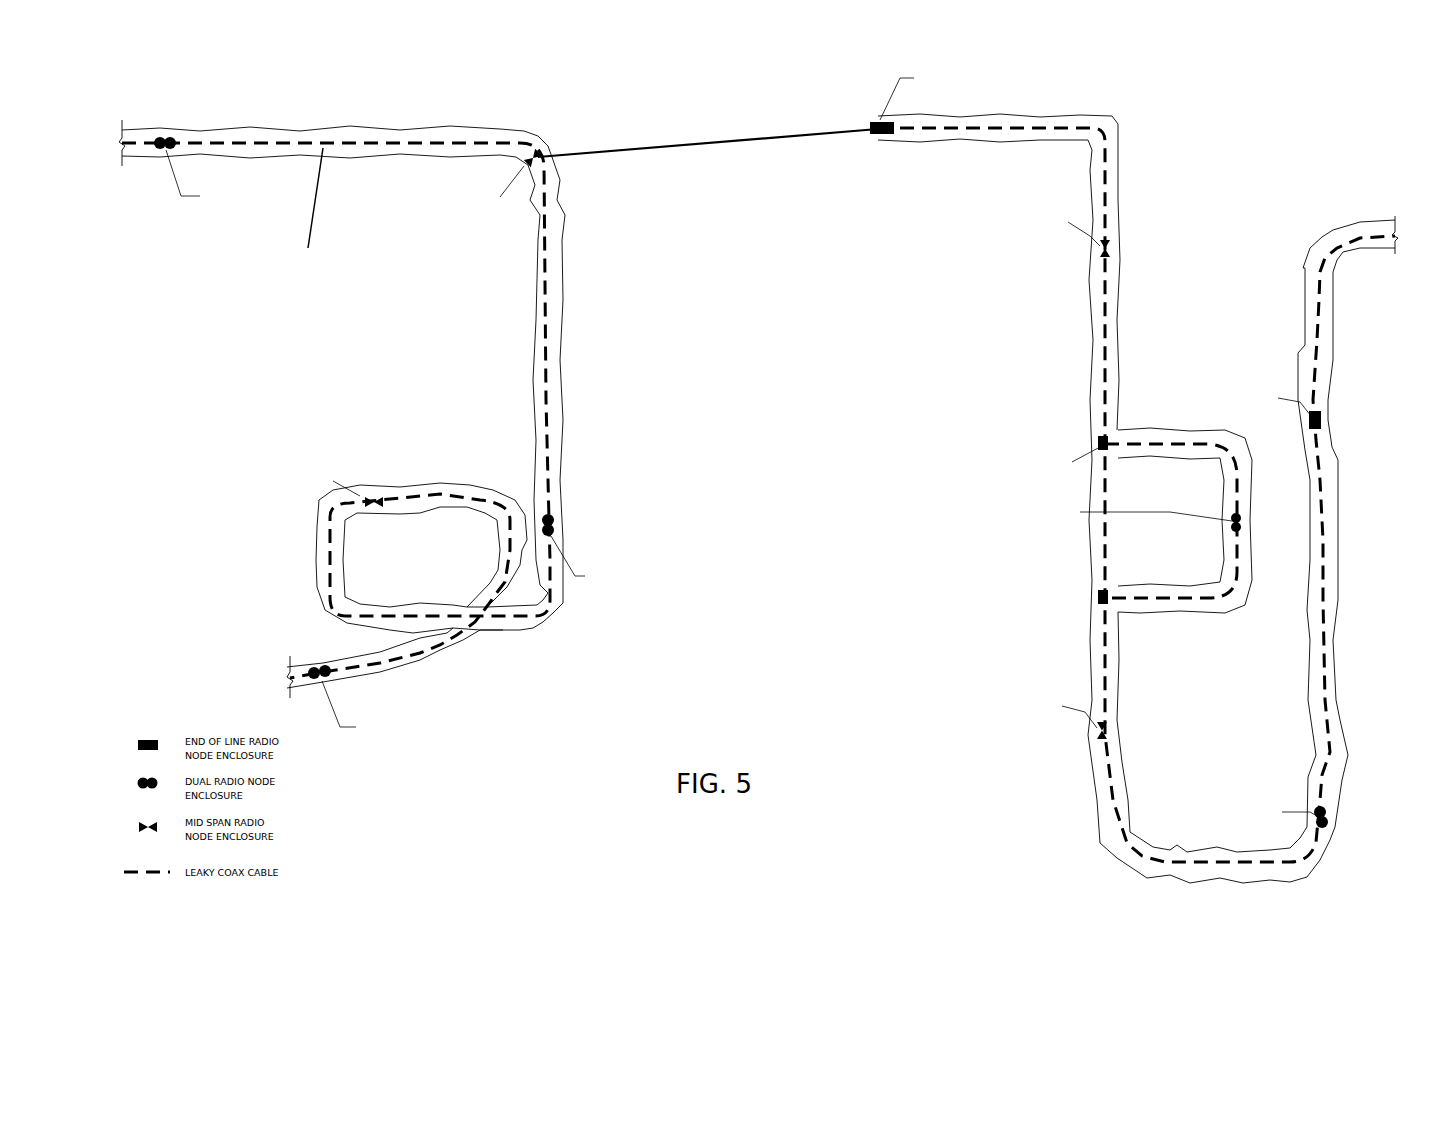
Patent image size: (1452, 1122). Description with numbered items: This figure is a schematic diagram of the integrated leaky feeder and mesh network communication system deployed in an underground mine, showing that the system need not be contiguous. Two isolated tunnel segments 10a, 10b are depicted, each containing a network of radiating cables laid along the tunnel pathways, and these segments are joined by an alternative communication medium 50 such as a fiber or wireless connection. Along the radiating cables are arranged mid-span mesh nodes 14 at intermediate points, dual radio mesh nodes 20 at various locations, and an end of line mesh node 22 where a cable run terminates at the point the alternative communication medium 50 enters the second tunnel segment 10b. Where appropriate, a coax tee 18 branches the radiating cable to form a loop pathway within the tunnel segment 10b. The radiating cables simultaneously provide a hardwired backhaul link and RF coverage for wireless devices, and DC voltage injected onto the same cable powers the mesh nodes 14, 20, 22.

The tunnel segment 10a is at (535, 302).
The tunnel segment 10b is at (1093, 304).
The mid-span mesh node 14 is at (537, 155).
The coax tee 18 is at (1094, 437).
The dual radio mesh node 20 is at (166, 136).
The end of line mesh node 22 is at (874, 125).
The alternative communication medium 50 is at (689, 148).